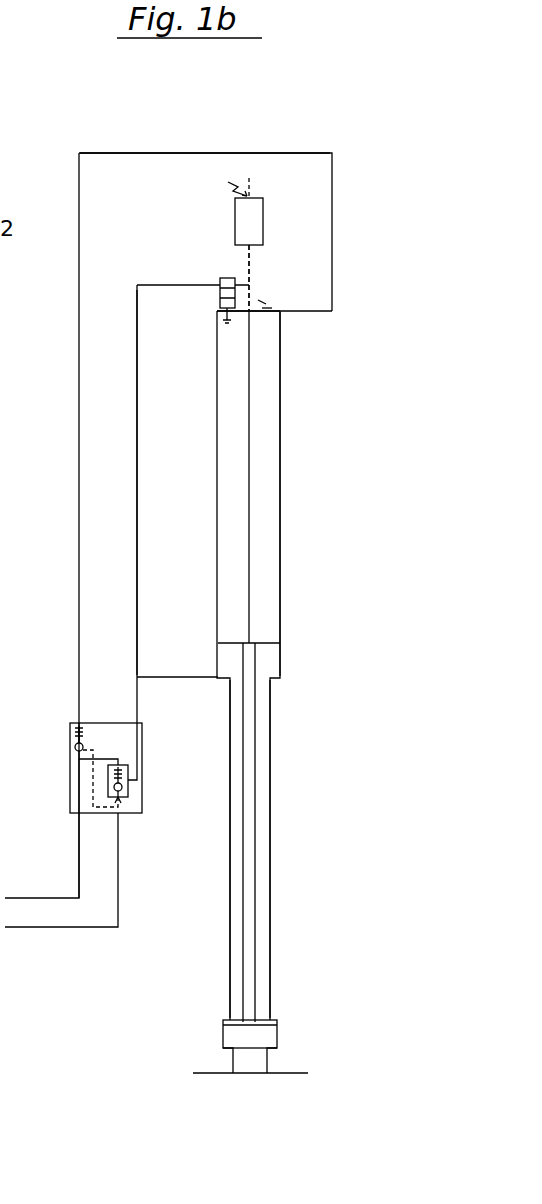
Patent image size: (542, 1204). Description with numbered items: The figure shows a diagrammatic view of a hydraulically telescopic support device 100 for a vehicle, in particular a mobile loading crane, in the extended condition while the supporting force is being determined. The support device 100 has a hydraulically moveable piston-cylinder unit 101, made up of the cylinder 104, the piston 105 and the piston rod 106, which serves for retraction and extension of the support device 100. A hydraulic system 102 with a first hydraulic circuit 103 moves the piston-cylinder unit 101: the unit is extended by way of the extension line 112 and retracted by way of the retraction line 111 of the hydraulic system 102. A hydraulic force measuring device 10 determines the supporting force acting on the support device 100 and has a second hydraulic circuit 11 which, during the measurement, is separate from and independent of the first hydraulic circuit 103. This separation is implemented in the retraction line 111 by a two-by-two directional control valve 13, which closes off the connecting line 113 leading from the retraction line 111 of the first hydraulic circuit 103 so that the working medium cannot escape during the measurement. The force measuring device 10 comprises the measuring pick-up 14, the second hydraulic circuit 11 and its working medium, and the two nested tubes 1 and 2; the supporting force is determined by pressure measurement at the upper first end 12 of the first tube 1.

The first tube 1 is at (250, 444).
The tube 2 is at (250, 905).
The hydraulic force measuring device 10 is at (262, 302).
The second hydraulic circuit 11 is at (252, 294).
The first end 12 is at (267, 305).
The 2/2 directional control valve 13 is at (228, 278).
The measuring pick-up 14 is at (259, 198).
The support device 100 is at (305, 567).
The piston-cylinder unit 101 is at (303, 521).
The hydraulic system 102 is at (72, 180).
The first hydraulic circuit 103 is at (333, 170).
The cylinder 104 is at (281, 389).
The piston 105 is at (275, 652).
The piston rod 106 is at (268, 796).
The retraction line 111 is at (137, 698).
The extension line 112 is at (135, 153).
The connecting line 113 is at (137, 490).